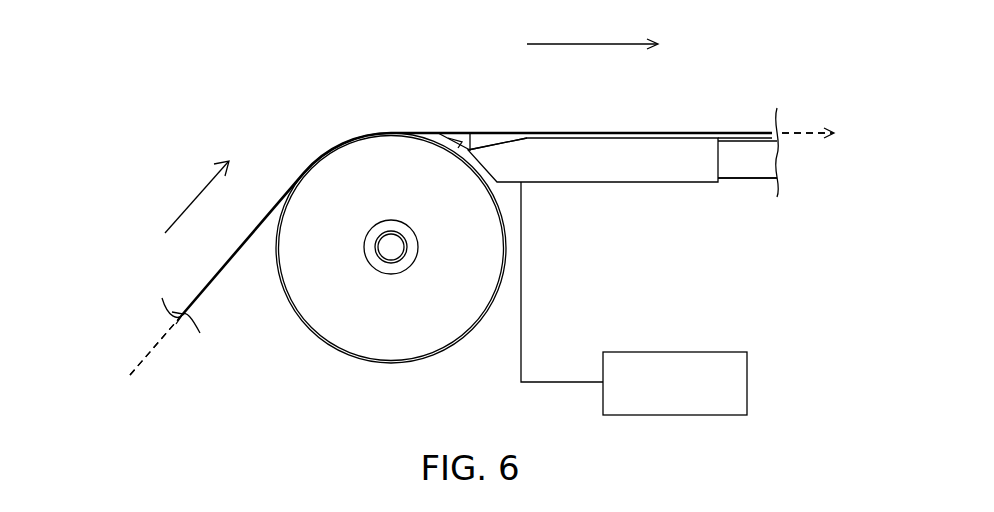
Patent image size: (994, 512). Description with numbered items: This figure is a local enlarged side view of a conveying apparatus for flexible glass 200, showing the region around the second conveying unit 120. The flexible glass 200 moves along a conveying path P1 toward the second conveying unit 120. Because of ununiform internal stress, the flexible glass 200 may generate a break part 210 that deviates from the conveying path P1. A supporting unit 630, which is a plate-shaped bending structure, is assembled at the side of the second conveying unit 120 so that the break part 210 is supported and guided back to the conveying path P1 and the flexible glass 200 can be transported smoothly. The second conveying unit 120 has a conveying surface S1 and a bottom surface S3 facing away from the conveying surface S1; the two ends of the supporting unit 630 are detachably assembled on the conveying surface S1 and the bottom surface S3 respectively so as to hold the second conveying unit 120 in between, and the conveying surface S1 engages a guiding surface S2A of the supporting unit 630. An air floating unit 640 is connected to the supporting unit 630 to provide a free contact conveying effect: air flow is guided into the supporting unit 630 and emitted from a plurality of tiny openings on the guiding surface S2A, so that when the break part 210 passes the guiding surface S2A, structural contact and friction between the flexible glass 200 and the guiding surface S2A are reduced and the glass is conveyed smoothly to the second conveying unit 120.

The flexible glass 200 is at (258, 226).
The break part 210 is at (458, 144).
The supporting unit 630 is at (543, 176).
The air floating unit 640 is at (683, 352).
The second conveying unit 120 is at (758, 165).
The conveying surface S1 is at (745, 140).
The guiding surface S2A is at (490, 143).
The bottom surface S3 is at (735, 183).
The conveying path P1 is at (143, 356).